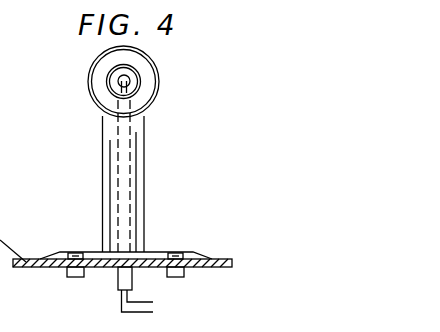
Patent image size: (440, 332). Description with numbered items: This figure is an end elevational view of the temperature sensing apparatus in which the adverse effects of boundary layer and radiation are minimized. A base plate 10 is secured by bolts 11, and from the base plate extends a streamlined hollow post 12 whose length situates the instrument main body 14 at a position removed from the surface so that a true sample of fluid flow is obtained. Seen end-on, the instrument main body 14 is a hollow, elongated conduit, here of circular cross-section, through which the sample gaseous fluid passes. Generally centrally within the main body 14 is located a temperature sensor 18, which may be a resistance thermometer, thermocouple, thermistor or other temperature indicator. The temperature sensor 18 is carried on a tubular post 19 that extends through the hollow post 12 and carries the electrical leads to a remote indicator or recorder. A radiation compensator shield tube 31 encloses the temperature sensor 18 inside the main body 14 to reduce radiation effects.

The base flange 10 is at (92, 252).
The bolts 11 is at (75, 277).
The hollow post 12 is at (139, 175).
The instrument main body 14 is at (87, 86).
The temperature sensor 18 is at (128, 82).
The tubular post 19 is at (125, 91).
The radiation compensator shield tube 31 is at (139, 70).